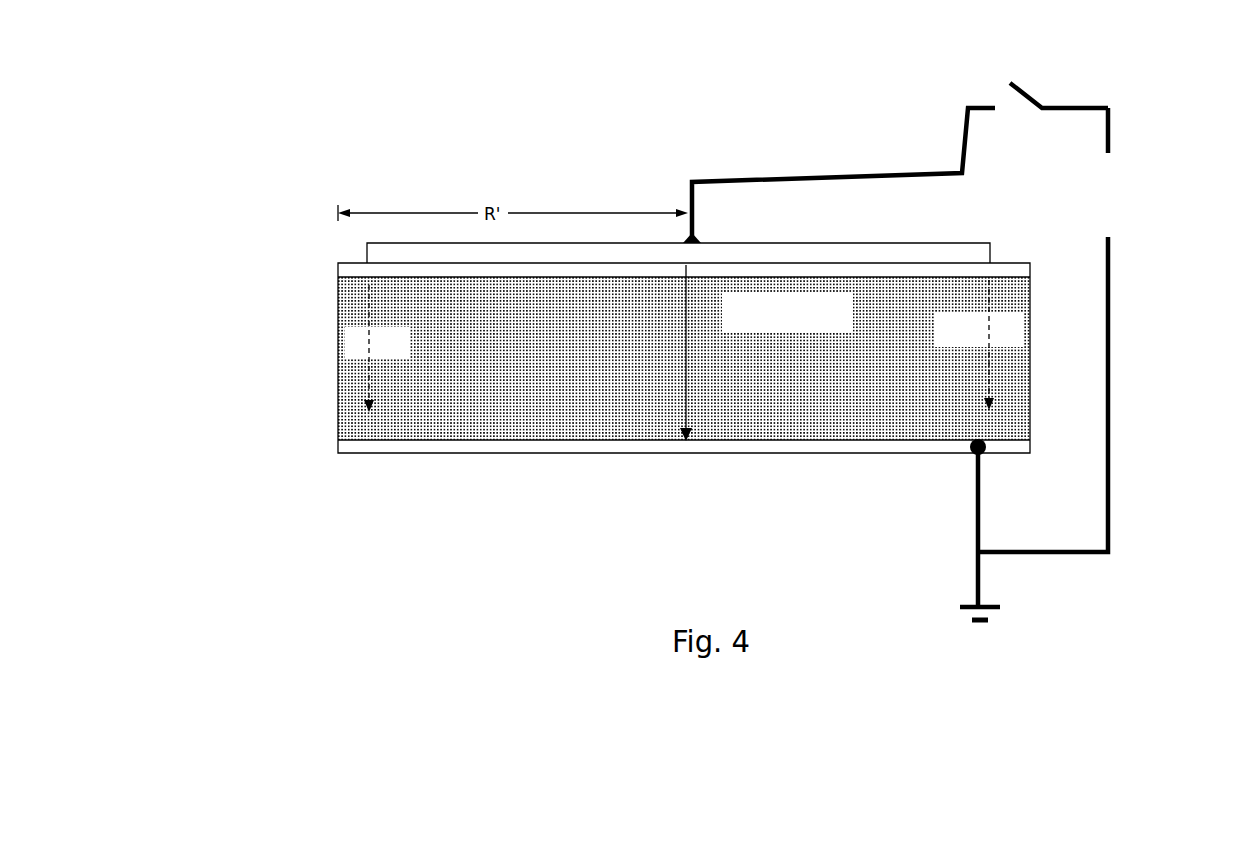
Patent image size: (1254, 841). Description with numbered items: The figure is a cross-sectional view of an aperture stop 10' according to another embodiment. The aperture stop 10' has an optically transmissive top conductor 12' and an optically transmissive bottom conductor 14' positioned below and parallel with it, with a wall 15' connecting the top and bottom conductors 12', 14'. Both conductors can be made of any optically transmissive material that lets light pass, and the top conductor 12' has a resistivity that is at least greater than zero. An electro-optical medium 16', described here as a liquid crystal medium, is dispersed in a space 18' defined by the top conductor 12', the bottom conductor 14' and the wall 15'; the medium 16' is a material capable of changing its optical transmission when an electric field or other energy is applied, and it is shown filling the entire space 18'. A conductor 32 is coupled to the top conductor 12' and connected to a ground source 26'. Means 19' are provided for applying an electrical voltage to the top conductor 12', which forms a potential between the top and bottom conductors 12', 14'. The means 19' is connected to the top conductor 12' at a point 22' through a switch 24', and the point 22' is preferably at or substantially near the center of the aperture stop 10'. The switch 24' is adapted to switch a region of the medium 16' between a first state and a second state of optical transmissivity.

The aperture stop 10' is at (682, 130).
The optically transmissive top conductor 12' is at (684, 246).
The optically transmissive bottom conductor 14' is at (684, 481).
The wall 15' is at (666, 360).
The electro-optical medium 16' is at (684, 382).
The space 18' is at (370, 380).
The means for applying an electrical voltage 19' is at (970, 330).
The point 22' is at (717, 225).
The switch 24' is at (1071, 75).
The ground source 26' is at (939, 538).
The conductor 32 is at (522, 243).